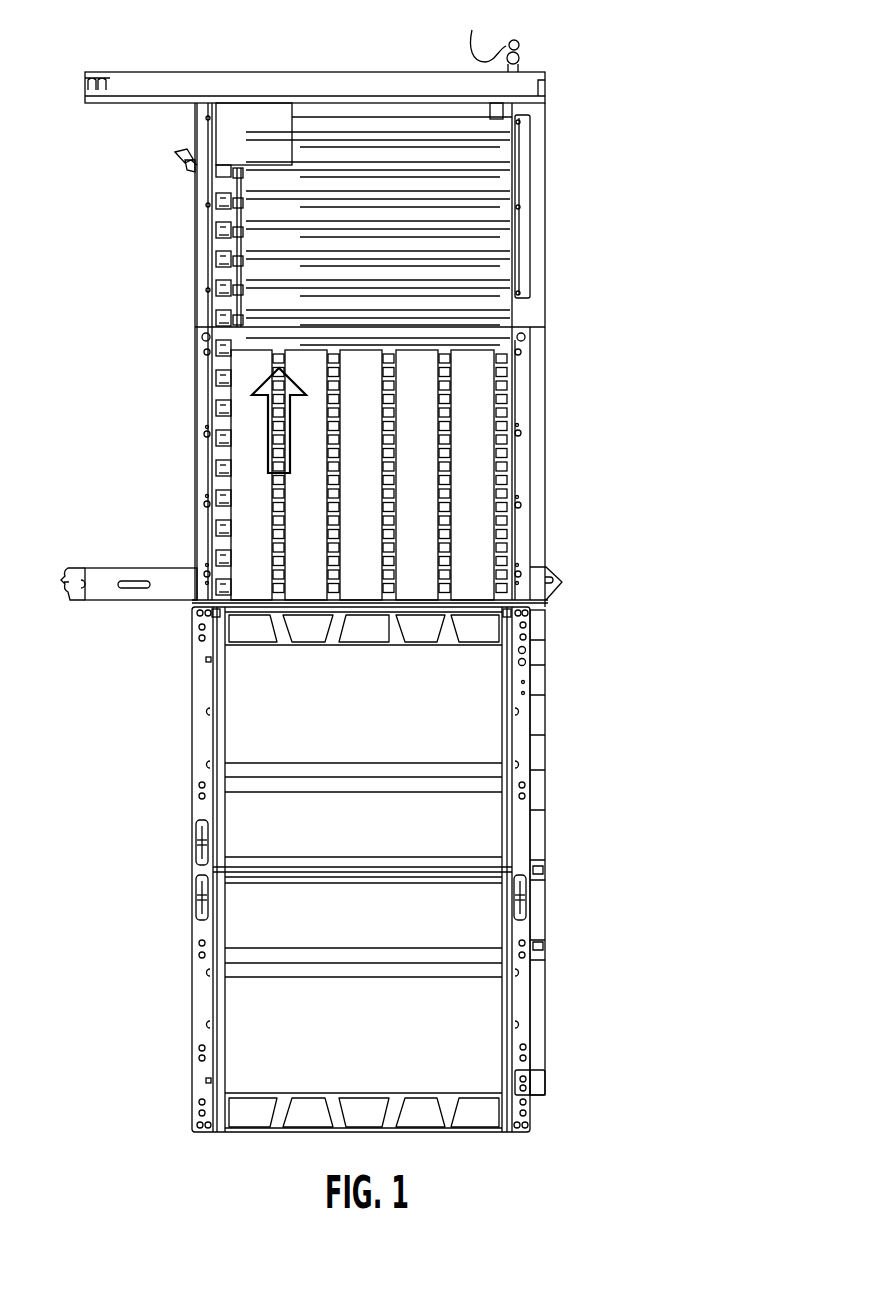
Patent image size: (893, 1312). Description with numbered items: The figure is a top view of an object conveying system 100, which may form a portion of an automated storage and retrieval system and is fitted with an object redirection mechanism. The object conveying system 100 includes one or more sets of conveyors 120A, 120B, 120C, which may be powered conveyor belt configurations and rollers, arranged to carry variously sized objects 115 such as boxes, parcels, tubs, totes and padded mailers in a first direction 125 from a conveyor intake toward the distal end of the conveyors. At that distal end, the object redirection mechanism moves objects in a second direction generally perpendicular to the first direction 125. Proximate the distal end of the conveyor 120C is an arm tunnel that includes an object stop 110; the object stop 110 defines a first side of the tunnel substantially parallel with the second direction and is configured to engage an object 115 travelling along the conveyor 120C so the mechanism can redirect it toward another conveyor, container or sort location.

The object conveying system 100 is at (381, 40).
The object stop 110 is at (430, 80).
The object 115 is at (241, 122).
The conveyor 120A is at (378, 714).
The conveyor 120B is at (492, 422).
The conveyor 120C is at (222, 260).
The first direction 125 is at (280, 440).